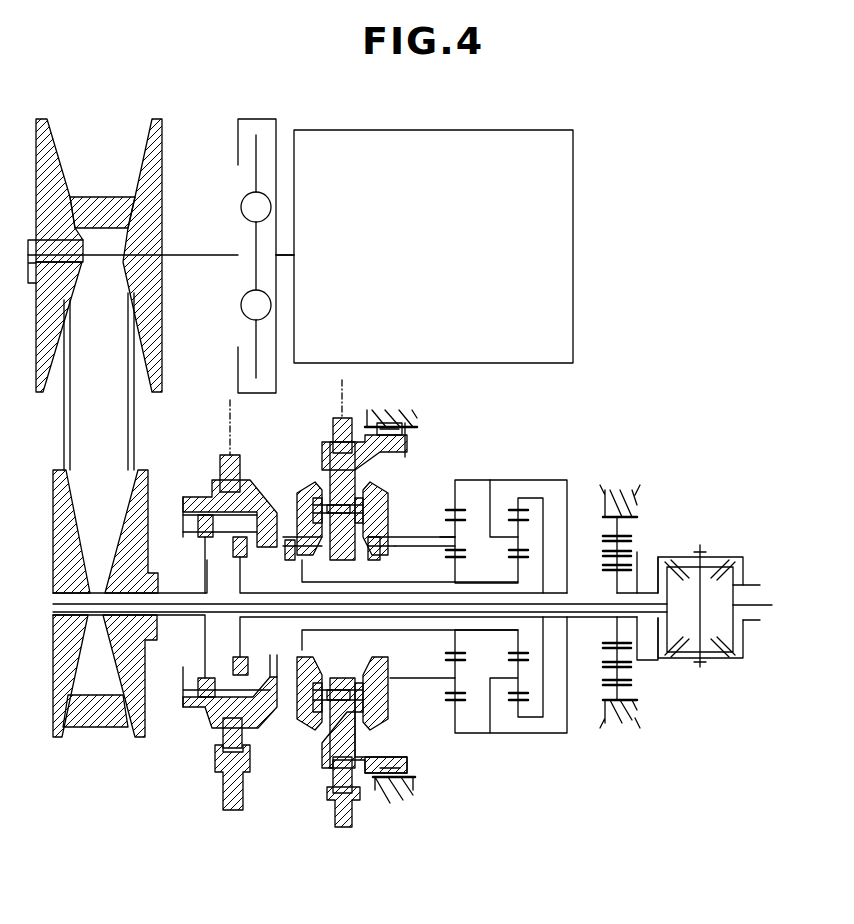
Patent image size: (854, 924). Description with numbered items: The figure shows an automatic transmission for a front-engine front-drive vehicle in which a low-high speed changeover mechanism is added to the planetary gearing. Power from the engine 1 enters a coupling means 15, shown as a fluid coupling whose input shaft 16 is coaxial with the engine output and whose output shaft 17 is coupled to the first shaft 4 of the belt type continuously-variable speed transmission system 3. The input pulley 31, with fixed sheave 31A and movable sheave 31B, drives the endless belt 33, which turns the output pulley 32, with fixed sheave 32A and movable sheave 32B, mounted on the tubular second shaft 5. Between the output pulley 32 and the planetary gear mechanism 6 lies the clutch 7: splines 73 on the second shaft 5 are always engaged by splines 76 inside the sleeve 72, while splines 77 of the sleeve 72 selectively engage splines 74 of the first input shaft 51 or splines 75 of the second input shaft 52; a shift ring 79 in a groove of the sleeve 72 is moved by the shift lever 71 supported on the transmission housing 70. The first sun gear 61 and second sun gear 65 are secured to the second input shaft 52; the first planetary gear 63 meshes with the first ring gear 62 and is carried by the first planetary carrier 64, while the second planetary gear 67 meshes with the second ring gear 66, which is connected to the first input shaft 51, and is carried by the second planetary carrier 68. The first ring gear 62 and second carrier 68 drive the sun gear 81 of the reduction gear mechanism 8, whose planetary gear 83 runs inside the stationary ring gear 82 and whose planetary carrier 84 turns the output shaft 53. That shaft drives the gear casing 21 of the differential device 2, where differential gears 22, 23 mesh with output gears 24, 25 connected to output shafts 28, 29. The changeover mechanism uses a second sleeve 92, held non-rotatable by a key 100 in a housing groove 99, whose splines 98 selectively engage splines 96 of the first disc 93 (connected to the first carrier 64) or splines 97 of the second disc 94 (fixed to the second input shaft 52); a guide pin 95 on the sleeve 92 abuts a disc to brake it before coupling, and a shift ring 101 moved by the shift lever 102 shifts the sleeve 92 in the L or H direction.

The engine 1 is at (580, 263).
The differential device 2 is at (723, 605).
The belt type continuously-variable speed transmission system 3 is at (123, 140).
The first shaft 4 is at (198, 256).
The second shaft 5 is at (167, 617).
The planetary gear mechanism 6 is at (478, 626).
The clutch 7 is at (402, 625).
The reduction gear mechanism 8 is at (639, 556).
The coupling means 15 is at (259, 118).
The input shaft 16 is at (296, 254).
The output shaft 17 is at (238, 257).
The gear casing 21 is at (680, 557).
The differential gear 22 is at (716, 563).
The differential gear 23 is at (720, 658).
The output gear 24 is at (667, 630).
The output gear 25 is at (735, 585).
The output shaft 28 is at (182, 604).
The output shaft 29 is at (762, 612).
The input pulley 31 is at (126, 217).
The fixed sheave 31A is at (165, 147).
The movable sheave 31B is at (62, 147).
The output pulley 32 is at (107, 645).
The fixed sheave 32A is at (53, 740).
The movable sheave 32B is at (138, 737).
The endless belt 33 is at (116, 198).
The first input shaft 51 is at (270, 672).
The second input shaft 52 is at (425, 630).
The output shaft 53 is at (647, 625).
The first sun gear 61 is at (456, 558).
The first ring gear 62 is at (455, 497).
The first planetary gear 63 is at (455, 688).
The first planetary carrier 64 is at (405, 537).
The second sun gear 65 is at (518, 568).
The second ring gear 66 is at (520, 500).
The second planetary gear 67 is at (518, 660).
The second planetary carrier 68 is at (490, 535).
The transmission housing 70 is at (387, 423).
The shift lever 71 is at (230, 808).
The sleeve 72 is at (252, 500).
The splines 73 is at (198, 528).
The splines 74 is at (237, 557).
The splines 75 is at (290, 560).
The splines 76 is at (195, 697).
The splines 77 is at (240, 657).
The shift ring 79 is at (220, 468).
The sun gear 81 is at (615, 578).
The ring gear 82 is at (630, 537).
The planetary gear 83 is at (616, 677).
The planetary carrier 84 is at (645, 548).
The second sleeve 92 is at (408, 763).
The first disc 93 is at (385, 707).
The second disc 94 is at (314, 720).
The guide pin 95 is at (328, 750).
The splines 96 is at (375, 540).
The splines 97 is at (340, 515).
The splines 98 is at (342, 675).
The groove 99 is at (378, 450).
The key 100 is at (405, 437).
The shift ring 101 is at (333, 434).
The shift lever 102 is at (342, 827).